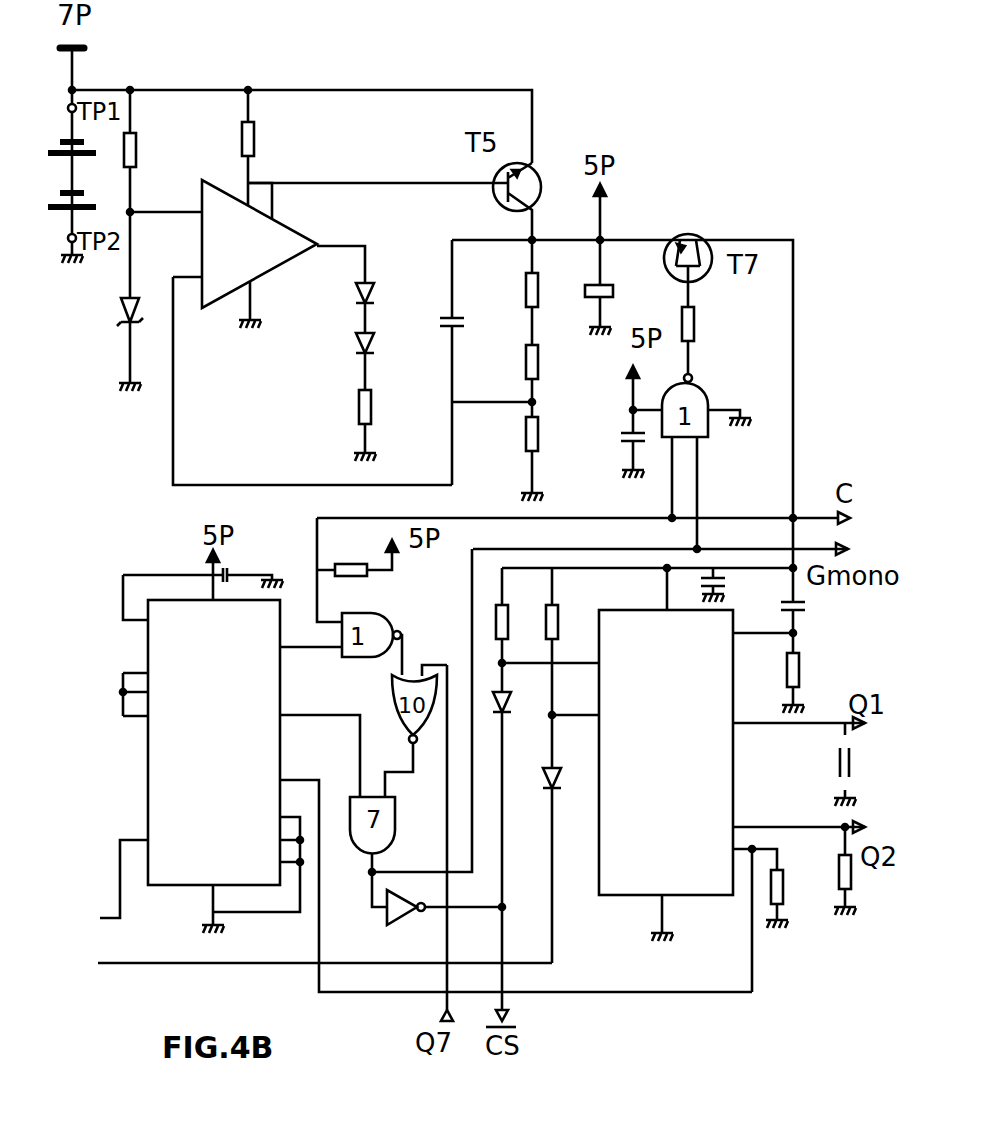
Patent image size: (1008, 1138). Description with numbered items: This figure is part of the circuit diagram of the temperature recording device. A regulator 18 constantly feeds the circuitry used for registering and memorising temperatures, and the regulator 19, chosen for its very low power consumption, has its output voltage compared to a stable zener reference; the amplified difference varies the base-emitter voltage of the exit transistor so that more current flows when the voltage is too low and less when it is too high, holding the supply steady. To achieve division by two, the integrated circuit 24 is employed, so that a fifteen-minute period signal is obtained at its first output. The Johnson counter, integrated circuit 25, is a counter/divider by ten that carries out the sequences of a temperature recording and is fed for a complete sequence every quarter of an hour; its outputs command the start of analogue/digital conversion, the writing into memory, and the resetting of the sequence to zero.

The regulator 18 is at (338, 82).
The regulator 19 is at (258, 209).
The integrated circuit 24 is at (216, 755).
The Johnson counter integrated circuit 25 is at (670, 752).